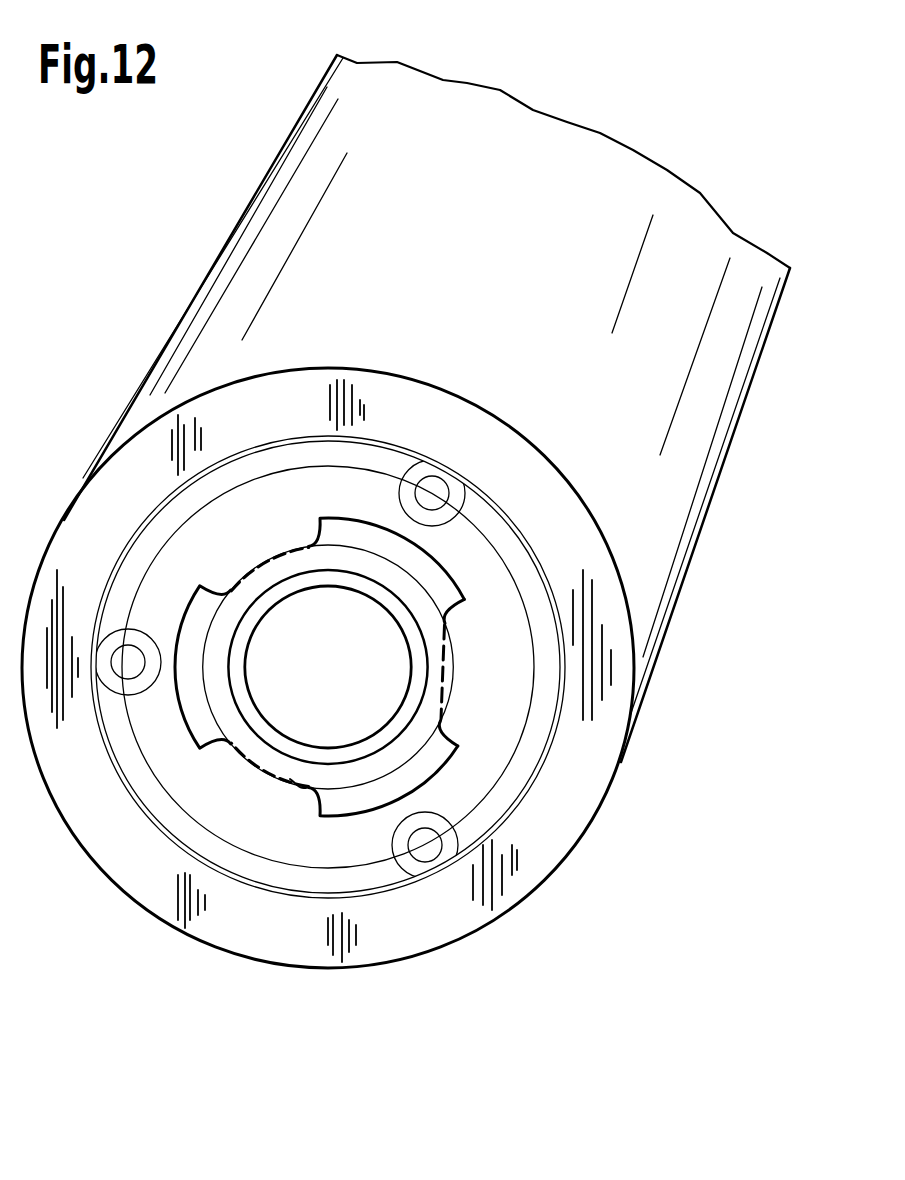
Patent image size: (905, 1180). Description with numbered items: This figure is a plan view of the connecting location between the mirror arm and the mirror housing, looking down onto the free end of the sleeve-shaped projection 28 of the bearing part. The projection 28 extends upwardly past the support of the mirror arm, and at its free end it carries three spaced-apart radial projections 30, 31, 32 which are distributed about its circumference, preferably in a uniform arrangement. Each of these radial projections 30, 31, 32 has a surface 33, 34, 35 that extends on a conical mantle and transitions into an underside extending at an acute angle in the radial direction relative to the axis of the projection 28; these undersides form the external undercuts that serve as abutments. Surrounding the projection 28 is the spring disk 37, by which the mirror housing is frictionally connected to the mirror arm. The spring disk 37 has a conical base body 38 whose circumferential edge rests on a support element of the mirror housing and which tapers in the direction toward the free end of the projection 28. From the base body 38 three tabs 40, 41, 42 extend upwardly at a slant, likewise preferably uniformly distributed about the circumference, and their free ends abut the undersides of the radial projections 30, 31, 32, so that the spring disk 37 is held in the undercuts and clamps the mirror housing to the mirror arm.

The sleeve-shaped projection 28 is at (284, 779).
The radial projection 30 is at (425, 570).
The radial projection 31 is at (442, 746).
The radial projection 32 is at (197, 721).
The surface 33 is at (357, 534).
The surface 34 is at (355, 811).
The surface 35 is at (207, 752).
The spring disk 37 is at (482, 646).
The conical base body 38 is at (490, 593).
The tab 40 is at (423, 460).
The tab 41 is at (422, 767).
The tab 42 is at (200, 607).